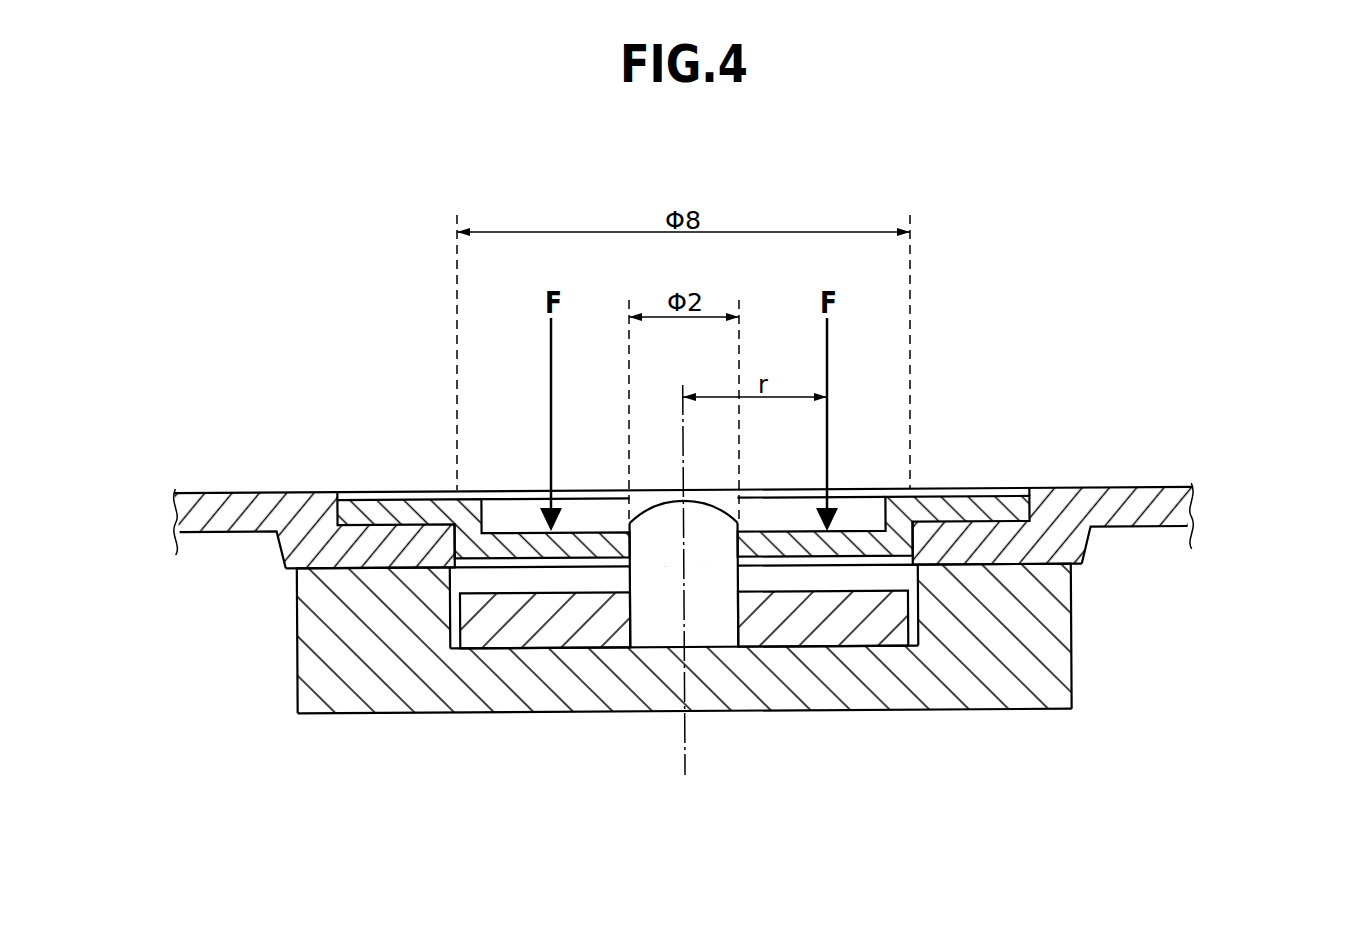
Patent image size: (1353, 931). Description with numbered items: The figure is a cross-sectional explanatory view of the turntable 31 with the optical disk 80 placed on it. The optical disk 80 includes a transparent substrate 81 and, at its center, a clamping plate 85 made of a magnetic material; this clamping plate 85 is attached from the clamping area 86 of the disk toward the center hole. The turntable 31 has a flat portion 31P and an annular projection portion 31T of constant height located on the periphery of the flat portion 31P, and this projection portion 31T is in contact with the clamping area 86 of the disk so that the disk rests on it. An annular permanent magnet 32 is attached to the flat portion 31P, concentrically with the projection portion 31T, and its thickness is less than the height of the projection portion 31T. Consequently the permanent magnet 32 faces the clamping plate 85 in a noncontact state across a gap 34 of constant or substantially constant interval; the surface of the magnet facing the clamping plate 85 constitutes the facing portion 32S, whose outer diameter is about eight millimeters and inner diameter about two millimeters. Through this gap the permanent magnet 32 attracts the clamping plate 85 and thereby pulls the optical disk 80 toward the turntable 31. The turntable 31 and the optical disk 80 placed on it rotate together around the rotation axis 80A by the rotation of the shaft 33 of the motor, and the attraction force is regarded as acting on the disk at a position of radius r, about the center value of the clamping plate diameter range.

The optical disk 80 is at (1063, 320).
The rotation axis 80A is at (682, 440).
The transparent substrate 81 is at (213, 503).
The clamping plate 85 is at (373, 505).
The clamping area 86 is at (357, 560).
The turntable 31 is at (930, 743).
The projection portion 31T is at (327, 594).
The flat portion 31P is at (547, 688).
The permanent magnet 32 is at (473, 633).
The facing portion 32S is at (505, 578).
The shaft 33 is at (653, 637).
The gap 34 is at (593, 583).